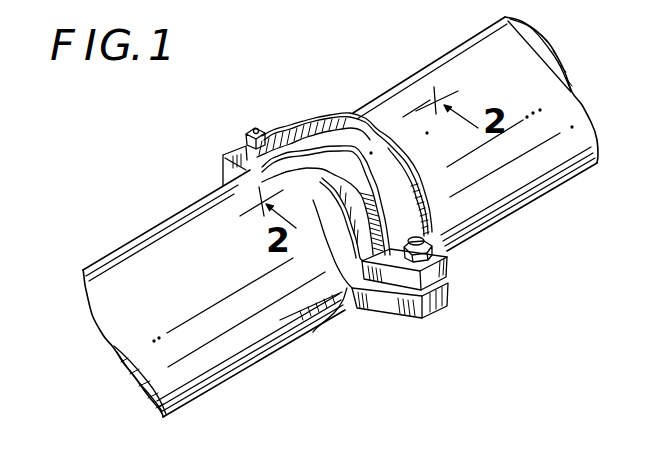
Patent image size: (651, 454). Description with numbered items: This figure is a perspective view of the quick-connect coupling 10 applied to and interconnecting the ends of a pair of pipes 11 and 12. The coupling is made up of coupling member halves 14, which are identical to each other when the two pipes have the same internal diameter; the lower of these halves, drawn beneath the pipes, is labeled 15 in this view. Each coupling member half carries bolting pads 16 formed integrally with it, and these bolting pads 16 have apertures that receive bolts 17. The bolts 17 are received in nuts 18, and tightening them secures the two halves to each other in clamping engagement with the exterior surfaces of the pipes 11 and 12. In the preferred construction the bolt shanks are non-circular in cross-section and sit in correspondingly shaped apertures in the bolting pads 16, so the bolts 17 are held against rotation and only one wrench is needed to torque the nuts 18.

The quick-connect coupling 10 is at (292, 122).
The pipe 11 is at (528, 195).
The pipe 12 is at (250, 362).
The coupling member half 14 is at (347, 140).
The lower clamp half 15 is at (313, 333).
The bolting pad 16 is at (222, 158).
The bolt 17 is at (250, 127).
The nut 18 is at (245, 142).